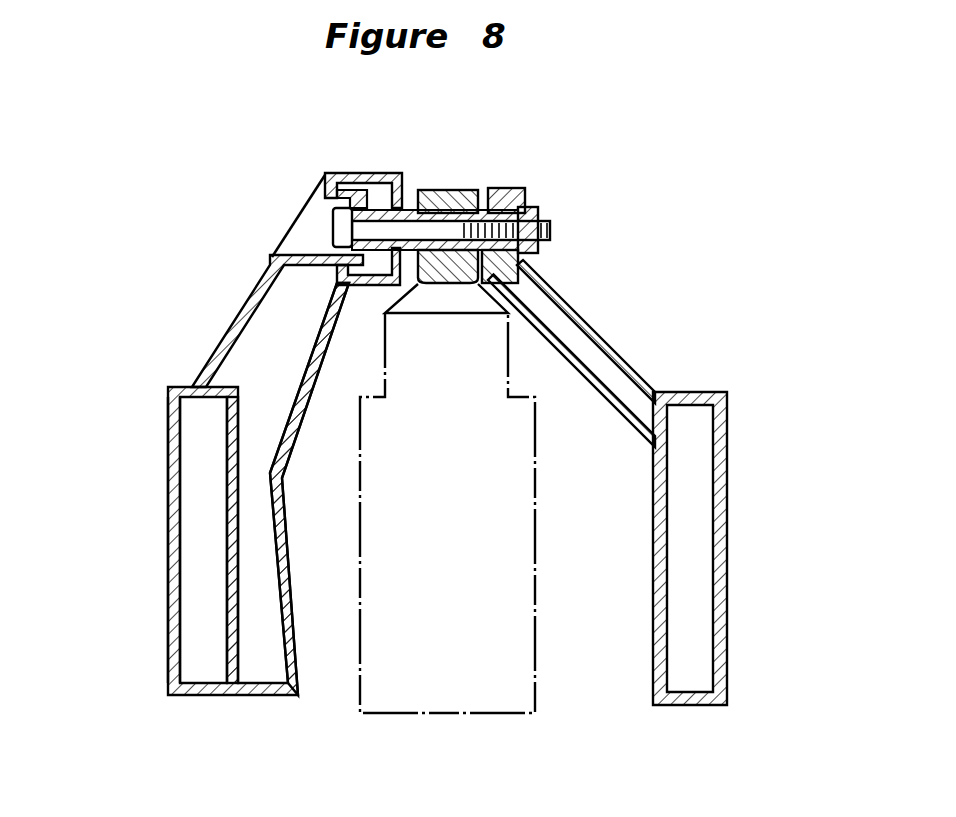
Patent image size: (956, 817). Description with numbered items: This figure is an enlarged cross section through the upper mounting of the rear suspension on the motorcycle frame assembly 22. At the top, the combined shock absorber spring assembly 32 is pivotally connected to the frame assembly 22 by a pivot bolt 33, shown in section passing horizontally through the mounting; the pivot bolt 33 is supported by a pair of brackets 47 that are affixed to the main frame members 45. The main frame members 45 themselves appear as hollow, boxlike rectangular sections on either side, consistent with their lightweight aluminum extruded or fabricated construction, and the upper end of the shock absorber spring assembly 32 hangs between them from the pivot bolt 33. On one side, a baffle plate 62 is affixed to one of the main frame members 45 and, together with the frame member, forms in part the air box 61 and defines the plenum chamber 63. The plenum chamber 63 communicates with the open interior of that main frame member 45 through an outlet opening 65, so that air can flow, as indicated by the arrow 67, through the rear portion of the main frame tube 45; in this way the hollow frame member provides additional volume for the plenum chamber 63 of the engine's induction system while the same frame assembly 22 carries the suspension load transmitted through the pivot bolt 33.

The frame assembly 22 is at (729, 412).
The shock absorber spring assembly 32 is at (533, 612).
The pivot bolt 33 is at (552, 231).
The main frame members 45 is at (168, 528).
The brackets 47 is at (363, 173).
The air box 61 is at (301, 663).
The baffle plate 62 is at (285, 577).
The plenum chamber 63 is at (275, 349).
The outlet opening 65 is at (168, 657).
The arrow 67 is at (268, 537).